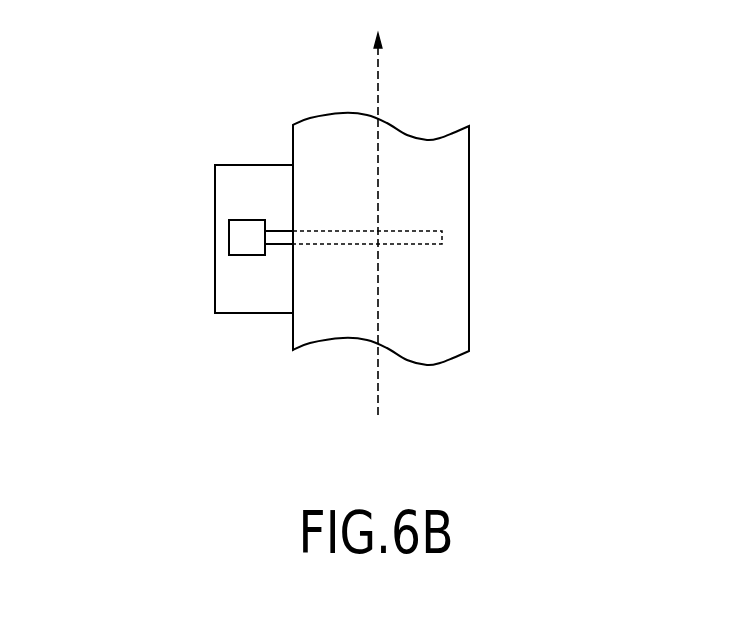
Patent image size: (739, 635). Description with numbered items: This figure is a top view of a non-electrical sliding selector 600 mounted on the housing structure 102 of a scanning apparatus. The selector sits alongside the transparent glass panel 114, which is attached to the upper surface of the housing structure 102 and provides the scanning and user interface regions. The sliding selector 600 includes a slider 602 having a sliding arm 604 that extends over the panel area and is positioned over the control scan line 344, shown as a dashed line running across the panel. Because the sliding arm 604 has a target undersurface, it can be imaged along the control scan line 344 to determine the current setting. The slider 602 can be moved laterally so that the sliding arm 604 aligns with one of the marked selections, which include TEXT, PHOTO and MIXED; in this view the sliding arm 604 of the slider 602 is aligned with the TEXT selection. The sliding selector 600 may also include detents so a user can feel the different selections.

The non-electrical sliding selector 600 is at (198, 131).
The housing structure 102 is at (105, 242).
The transparent panel 114 is at (520, 242).
The control scan line 344 is at (378, 230).
The slider 602 is at (237, 255).
The sliding arm 604 is at (273, 245).